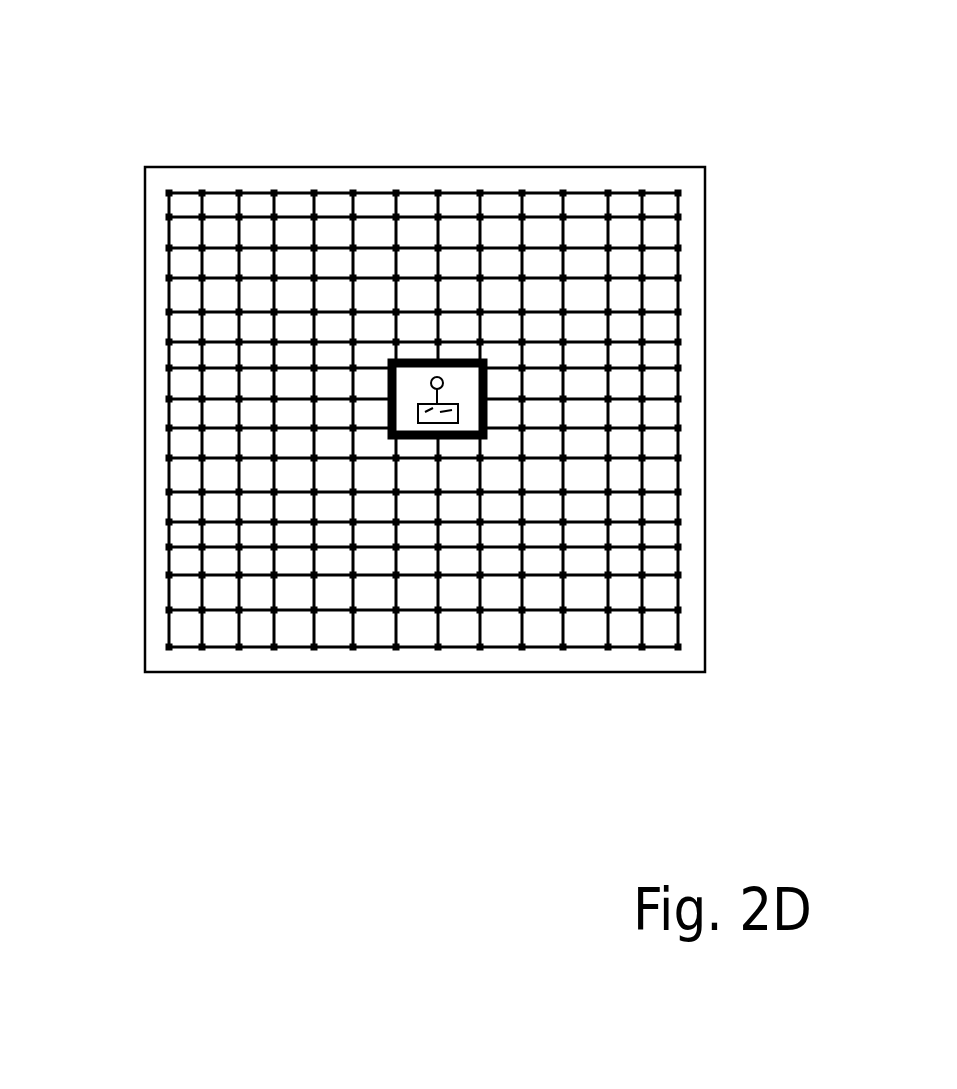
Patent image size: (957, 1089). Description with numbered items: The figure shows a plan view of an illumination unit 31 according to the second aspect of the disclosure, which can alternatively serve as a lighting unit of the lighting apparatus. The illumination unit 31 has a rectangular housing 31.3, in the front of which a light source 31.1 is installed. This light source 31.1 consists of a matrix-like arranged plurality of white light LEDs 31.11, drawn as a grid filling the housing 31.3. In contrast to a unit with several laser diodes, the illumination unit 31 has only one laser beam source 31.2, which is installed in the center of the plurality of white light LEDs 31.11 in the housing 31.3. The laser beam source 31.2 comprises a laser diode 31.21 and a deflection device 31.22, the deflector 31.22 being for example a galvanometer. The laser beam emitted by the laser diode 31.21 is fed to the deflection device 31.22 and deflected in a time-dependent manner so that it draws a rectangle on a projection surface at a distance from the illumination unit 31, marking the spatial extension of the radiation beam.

The illumination unit 31 is at (425, 63).
The light source 31.1 is at (536, 420).
The white light LEDs 31.11 is at (608, 308).
The laser beam source 31.2 is at (463, 358).
The laser diode 31.21 is at (388, 384).
The deflection device 31.22 is at (388, 418).
The housing 31.3 is at (172, 167).